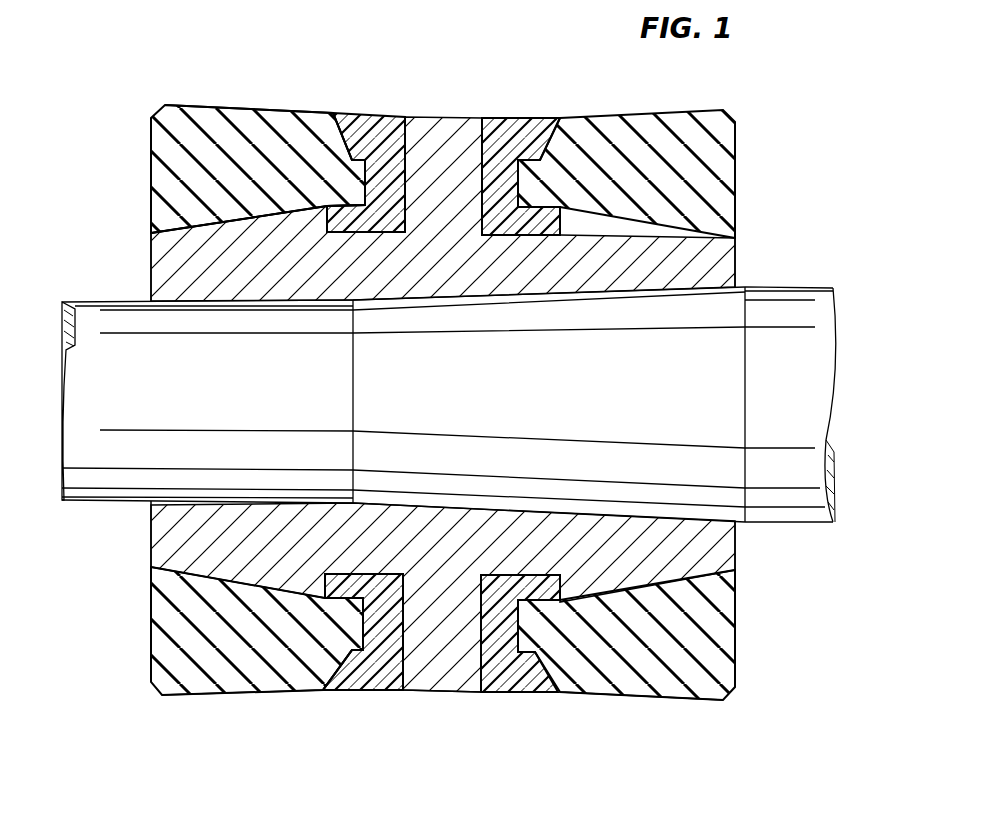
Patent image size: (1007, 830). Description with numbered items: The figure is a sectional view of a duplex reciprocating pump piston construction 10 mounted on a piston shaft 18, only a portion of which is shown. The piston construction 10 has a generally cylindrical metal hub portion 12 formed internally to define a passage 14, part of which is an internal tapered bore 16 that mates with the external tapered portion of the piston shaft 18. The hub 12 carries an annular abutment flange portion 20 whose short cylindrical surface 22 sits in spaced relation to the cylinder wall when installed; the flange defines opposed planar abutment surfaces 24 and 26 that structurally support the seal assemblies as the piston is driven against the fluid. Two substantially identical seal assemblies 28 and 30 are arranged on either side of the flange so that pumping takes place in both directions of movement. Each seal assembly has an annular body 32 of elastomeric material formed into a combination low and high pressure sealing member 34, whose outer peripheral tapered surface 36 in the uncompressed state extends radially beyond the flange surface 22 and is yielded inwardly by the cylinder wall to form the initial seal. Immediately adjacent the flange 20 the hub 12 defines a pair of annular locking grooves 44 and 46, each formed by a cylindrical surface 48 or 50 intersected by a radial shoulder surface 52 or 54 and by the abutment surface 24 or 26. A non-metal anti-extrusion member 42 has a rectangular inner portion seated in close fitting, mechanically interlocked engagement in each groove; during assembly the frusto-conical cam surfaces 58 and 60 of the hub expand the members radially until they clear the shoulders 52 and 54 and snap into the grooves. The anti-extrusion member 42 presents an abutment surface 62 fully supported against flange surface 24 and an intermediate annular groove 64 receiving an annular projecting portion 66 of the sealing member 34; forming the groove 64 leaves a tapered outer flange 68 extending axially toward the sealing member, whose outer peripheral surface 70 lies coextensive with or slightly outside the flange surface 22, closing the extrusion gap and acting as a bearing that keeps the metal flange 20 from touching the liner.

The piston construction 10 is at (122, 90).
The hub portion 12 is at (452, 285).
The passage 14 is at (201, 406).
The internal tapered bore 16 is at (520, 505).
The piston shaft 18 is at (806, 287).
The annular abutment flange portion 20 is at (452, 118).
The cylindrical surface 22 is at (452, 690).
The annular abutment surface 24 is at (404, 129).
The annular abutment surface 26 is at (503, 140).
The seal assembly 28 is at (200, 703).
The seal assembly 30 is at (678, 710).
The annular body 32 is at (180, 148).
The sealing member 34 is at (170, 190).
The outer peripheral tapered surface 36 is at (212, 107).
The anti-extrusion member 42 is at (390, 143).
The locking groove 44 is at (352, 578).
The locking groove 46 is at (545, 583).
The cylindrical surface 48 is at (374, 575).
The cylindrical surface 50 is at (496, 575).
The radial surface 52 is at (333, 575).
The radial surface 54 is at (556, 602).
The tapered surface 58 is at (182, 590).
The tapered surface 60 is at (738, 605).
The annular abutment surface 62 is at (417, 670).
The intermediate annular groove 64 is at (362, 190).
The annular projecting portion 66 is at (333, 235).
The outer flange 68 is at (347, 675).
The outer peripheral surface 70 is at (377, 690).